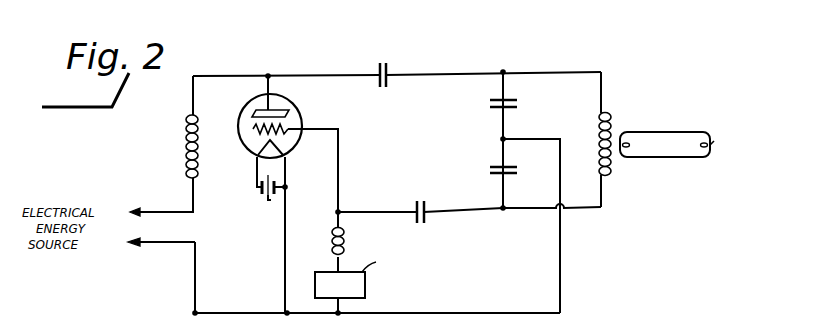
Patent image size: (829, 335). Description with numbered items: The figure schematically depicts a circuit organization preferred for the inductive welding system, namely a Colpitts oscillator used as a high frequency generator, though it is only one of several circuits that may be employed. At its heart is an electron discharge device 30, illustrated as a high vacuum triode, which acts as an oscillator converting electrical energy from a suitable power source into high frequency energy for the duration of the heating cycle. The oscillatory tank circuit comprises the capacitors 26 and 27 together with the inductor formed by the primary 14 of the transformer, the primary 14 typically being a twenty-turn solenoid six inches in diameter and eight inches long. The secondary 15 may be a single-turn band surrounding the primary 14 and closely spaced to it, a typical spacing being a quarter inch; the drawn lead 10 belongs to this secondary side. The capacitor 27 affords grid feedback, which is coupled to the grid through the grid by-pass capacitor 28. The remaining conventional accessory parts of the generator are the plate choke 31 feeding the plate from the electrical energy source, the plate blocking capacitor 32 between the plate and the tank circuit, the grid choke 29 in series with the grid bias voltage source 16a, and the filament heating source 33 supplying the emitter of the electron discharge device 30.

The gaseous discharge lamp electrode/lead 10 is at (730, 128).
The primary 14 is at (609, 116).
The secondary 15 is at (622, 134).
The grid bias voltage source 16a is at (315, 285).
The capacitor 26 is at (490, 103).
The capacitor 27 is at (490, 171).
The grid by-pass capacitor 28 is at (418, 200).
The grid choke 29 is at (330, 240).
The electron discharge device 30 is at (300, 109).
The plate choke 31 is at (185, 150).
The plate blocking capacitor 32 is at (390, 80).
The filament heating source 33 is at (270, 200).